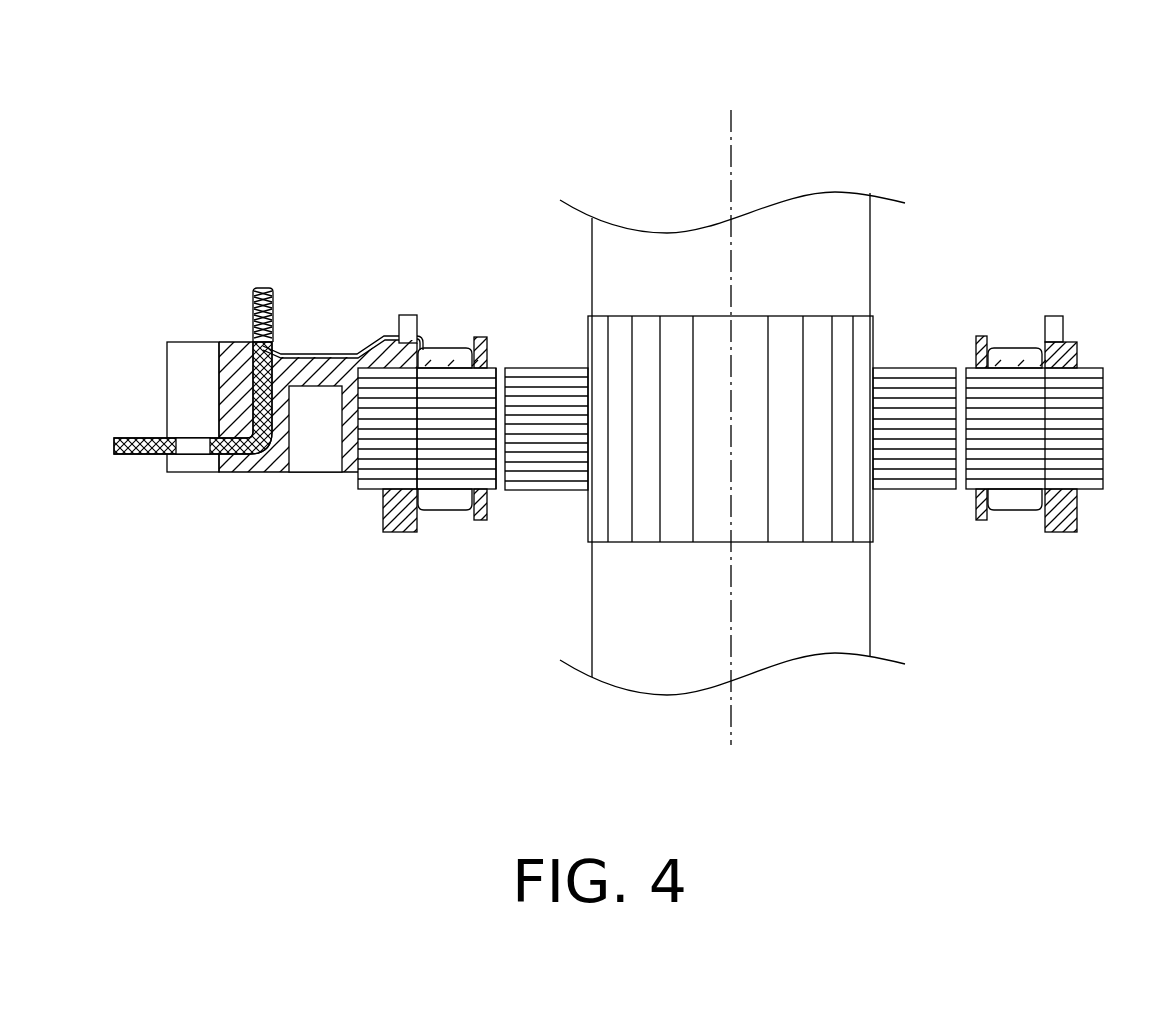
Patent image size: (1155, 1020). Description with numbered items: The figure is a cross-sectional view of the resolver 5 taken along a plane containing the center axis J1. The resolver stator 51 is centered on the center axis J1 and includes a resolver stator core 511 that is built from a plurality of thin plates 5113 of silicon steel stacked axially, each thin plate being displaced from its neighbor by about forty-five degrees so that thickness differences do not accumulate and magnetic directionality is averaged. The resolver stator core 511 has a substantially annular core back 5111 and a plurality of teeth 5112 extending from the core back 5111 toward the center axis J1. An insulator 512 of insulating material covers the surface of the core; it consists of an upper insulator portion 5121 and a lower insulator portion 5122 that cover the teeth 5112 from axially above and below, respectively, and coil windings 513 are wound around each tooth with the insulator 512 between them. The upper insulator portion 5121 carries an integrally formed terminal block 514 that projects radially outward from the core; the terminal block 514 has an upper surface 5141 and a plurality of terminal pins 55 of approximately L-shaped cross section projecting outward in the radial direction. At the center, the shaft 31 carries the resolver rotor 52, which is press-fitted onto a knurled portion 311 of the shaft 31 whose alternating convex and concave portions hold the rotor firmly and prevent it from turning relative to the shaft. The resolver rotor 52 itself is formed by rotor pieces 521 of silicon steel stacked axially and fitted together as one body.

The resolver 5 is at (1068, 162).
The center axis J1 is at (732, 130).
The shaft 31 is at (771, 299).
The knurled portion 311 is at (792, 328).
The resolver stator 51 is at (308, 425).
The resolver stator core 511 is at (346, 564).
The core back 5111 is at (412, 462).
The teeth 5112 is at (462, 457).
The thin plates 5113 is at (490, 477).
The insulator 512 is at (375, 228).
The upper insulator portion 5121 is at (487, 340).
The lower insulator portion 5122 is at (312, 353).
The coil windings 513 is at (463, 505).
The terminal block 514 is at (265, 290).
The upper surface 5141 is at (293, 263).
The terminal pins 55 is at (252, 296).
The resolver rotor 52 is at (988, 491).
The rotor pieces 521 is at (902, 482).